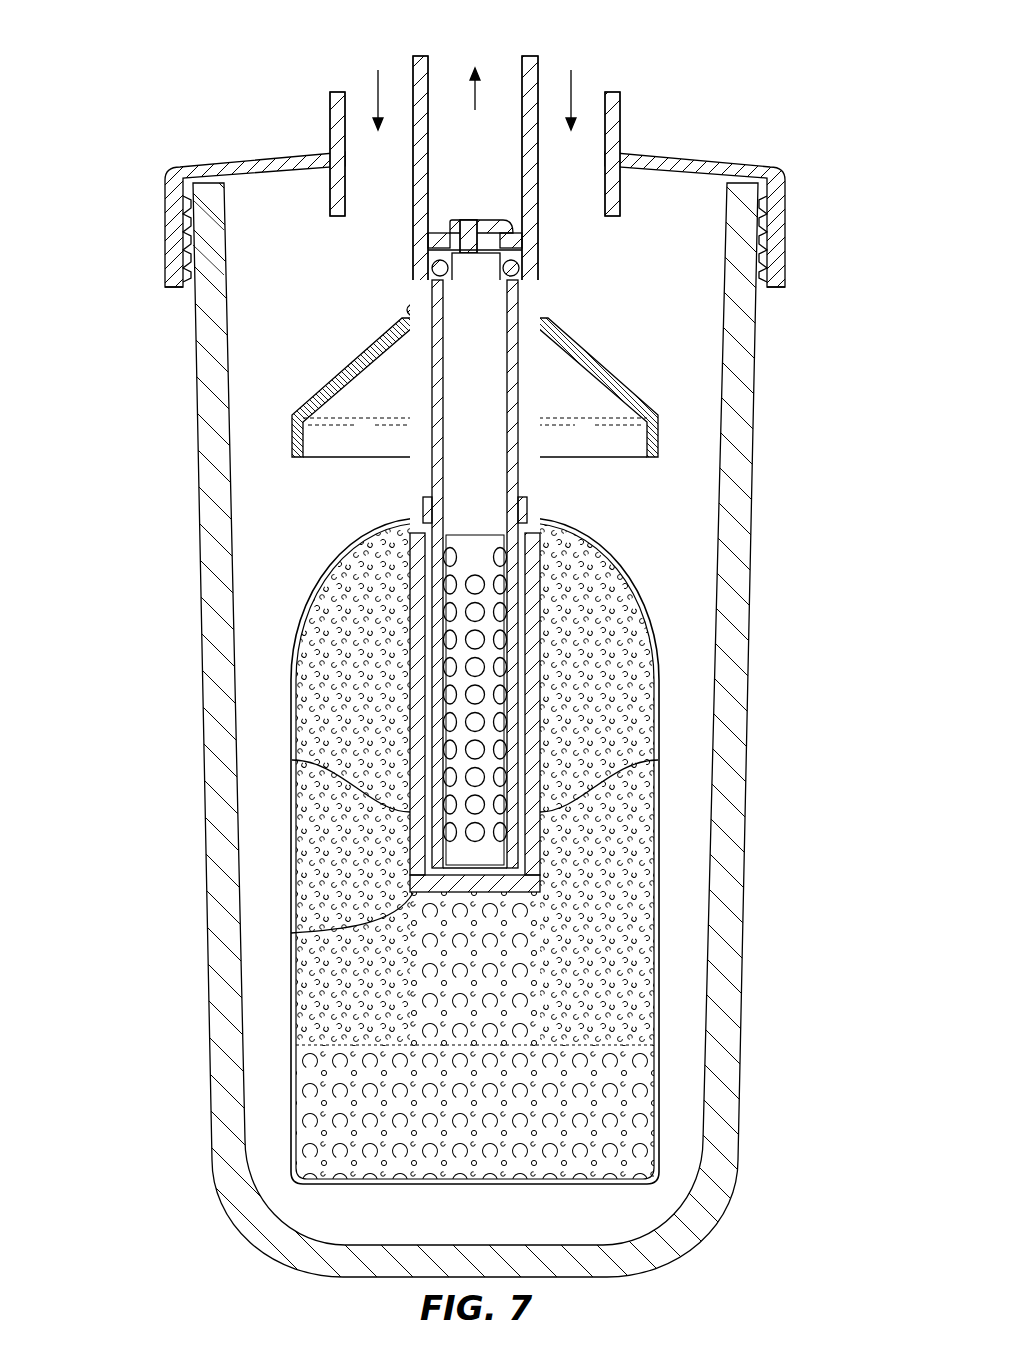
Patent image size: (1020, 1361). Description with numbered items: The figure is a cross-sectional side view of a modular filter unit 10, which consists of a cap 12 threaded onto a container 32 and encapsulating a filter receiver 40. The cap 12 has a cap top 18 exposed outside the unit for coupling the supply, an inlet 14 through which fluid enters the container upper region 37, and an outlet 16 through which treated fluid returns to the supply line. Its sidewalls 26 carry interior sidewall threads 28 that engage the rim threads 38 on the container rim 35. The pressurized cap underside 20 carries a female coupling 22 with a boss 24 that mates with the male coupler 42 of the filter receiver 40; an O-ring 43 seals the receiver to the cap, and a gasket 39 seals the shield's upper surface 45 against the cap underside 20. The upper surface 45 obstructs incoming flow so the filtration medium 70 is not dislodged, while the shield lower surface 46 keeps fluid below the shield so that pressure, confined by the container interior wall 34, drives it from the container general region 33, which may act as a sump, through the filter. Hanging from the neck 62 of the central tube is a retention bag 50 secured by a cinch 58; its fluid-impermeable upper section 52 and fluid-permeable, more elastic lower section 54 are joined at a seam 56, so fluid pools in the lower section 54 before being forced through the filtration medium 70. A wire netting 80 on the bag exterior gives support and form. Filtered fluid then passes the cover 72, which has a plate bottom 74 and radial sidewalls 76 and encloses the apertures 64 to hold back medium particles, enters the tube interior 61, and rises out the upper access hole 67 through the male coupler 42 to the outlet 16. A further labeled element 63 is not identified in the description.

The modular filter unit 10 is at (149, 120).
The cap 12 is at (788, 190).
The inlet 14 is at (366, 99).
The outlet 16 is at (497, 88).
The cap top 18 is at (305, 150).
The cap underside 20 is at (412, 236).
The female coupling 22 is at (539, 235).
The boss 24 is at (413, 265).
The sidewalls 26 is at (182, 225).
The interior sidewall threads 28 is at (182, 276).
The container 32 is at (210, 830).
The container general region 33 is at (253, 862).
The container interior wall 34 is at (723, 492).
The container rim 35 is at (227, 217).
The container upper region 37 is at (271, 322).
The rim threads 38 is at (200, 265).
The gasket 39 is at (408, 307).
The filter receiver 40 is at (607, 359).
The male coupler 42 is at (503, 218).
The O-ring 43 is at (520, 270).
The upper surface 45 is at (372, 343).
The shield lower surface 46 is at (546, 395).
The retention bag 50 is at (664, 702).
The upper section 52 is at (665, 915).
The lower section 54 is at (292, 1108).
The seam 56 is at (294, 1045).
The cinch 58 is at (530, 517).
The tube interior 61 is at (463, 447).
The neck 62 is at (398, 505).
The clamp 63 is at (425, 497).
The apertures 64 is at (466, 717).
The upper access hole 67 is at (464, 281).
The filtration medium 70 is at (343, 649).
The cover 72 is at (410, 602).
The plate bottom 74 is at (291, 933).
The radial sidewalls 76 is at (473, 780).
The wire netting 80 is at (659, 655).